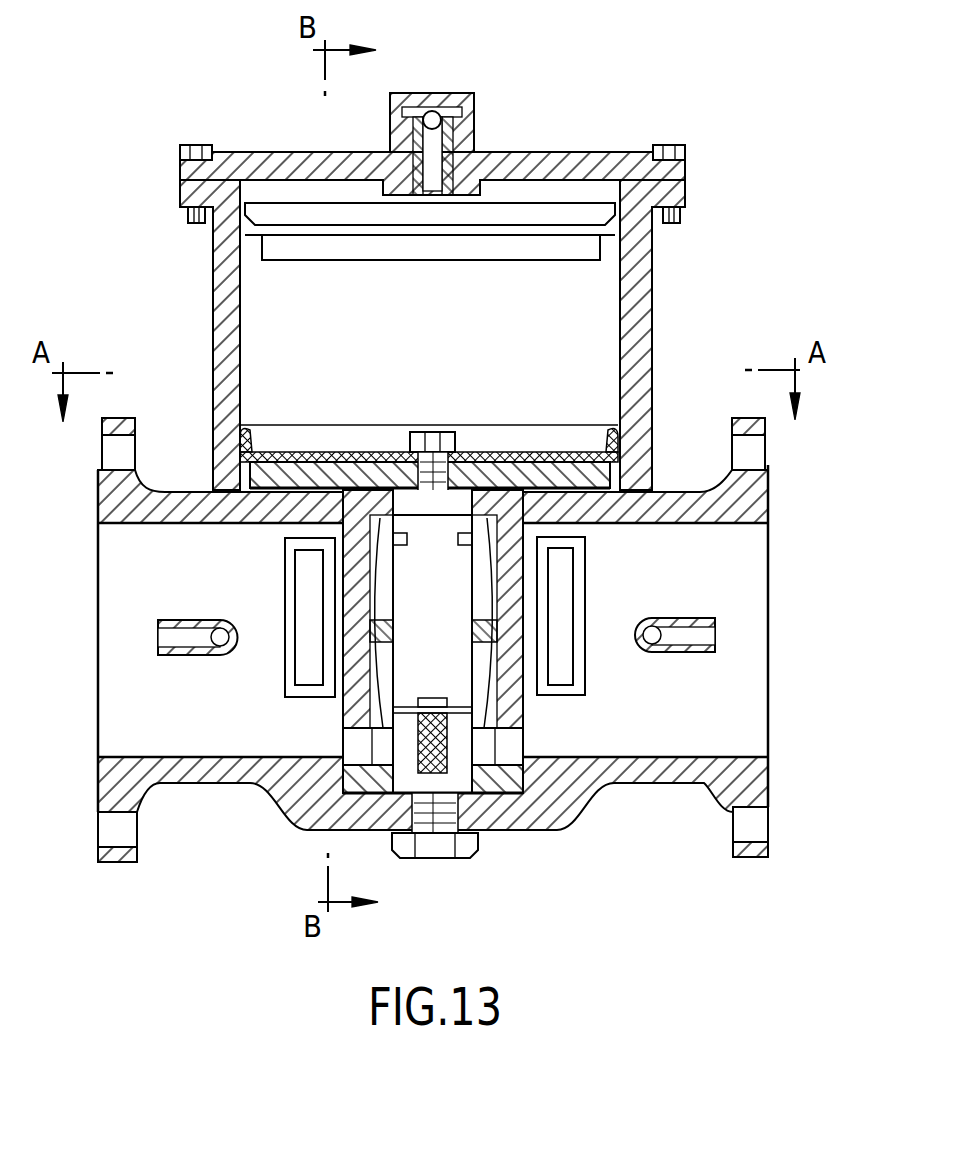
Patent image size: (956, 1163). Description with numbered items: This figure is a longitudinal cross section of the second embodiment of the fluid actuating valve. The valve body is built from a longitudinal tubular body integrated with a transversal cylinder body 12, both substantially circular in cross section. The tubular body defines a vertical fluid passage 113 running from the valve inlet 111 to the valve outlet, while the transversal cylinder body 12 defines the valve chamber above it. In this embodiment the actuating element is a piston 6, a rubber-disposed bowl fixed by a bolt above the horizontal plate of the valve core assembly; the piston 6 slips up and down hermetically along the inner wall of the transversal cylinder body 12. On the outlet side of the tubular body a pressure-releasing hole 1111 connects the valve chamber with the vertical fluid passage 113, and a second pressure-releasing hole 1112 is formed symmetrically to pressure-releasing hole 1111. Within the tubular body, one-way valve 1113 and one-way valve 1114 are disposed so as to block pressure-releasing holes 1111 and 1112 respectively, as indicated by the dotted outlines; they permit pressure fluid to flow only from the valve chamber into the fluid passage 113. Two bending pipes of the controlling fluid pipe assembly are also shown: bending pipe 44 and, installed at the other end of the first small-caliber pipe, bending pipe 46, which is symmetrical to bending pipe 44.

The transversal cylinder body 12 is at (640, 298).
The piston 6 is at (512, 455).
The bending pipe 46 is at (185, 620).
The bending pipe 44 is at (670, 618).
The pressure-releasing hole 1111 is at (305, 670).
The one-way valve 1113 is at (312, 697).
The pressure-releasing hole 1112 is at (565, 663).
The one-way valve 1114 is at (548, 690).
The valve inlet 111 is at (770, 645).
The vertical fluid passage 113 is at (740, 708).